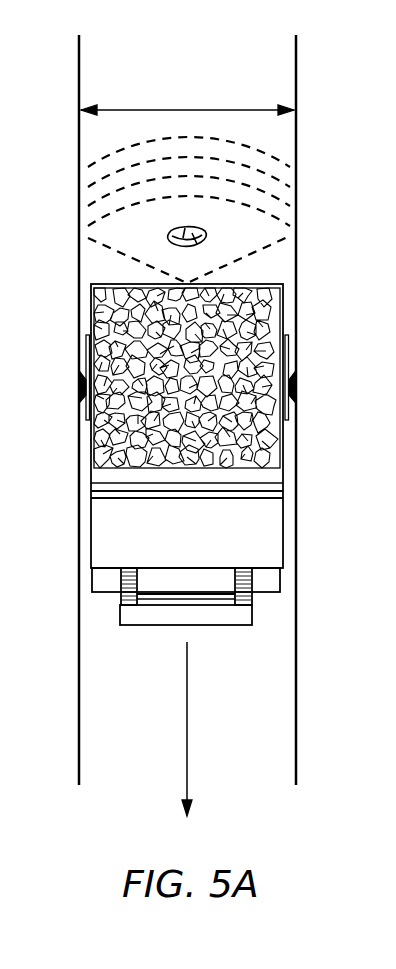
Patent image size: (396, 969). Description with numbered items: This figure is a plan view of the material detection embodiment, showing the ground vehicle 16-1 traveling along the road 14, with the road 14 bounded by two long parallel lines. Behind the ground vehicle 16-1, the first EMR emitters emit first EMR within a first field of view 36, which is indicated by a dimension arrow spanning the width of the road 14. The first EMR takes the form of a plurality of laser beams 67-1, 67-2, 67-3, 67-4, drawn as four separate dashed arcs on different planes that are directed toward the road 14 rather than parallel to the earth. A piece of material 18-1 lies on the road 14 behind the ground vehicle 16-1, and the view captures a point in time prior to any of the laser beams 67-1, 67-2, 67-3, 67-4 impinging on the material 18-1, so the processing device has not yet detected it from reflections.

The road 14 is at (233, 731).
The first field of view 36 is at (250, 104).
The laser beam 67-1 is at (258, 153).
The laser beam 67-2 is at (270, 178).
The laser beam 67-3 is at (270, 198).
The laser beam 67-4 is at (268, 218).
The material 18-1 is at (184, 231).
The ground vehicle 16-1 is at (120, 532).